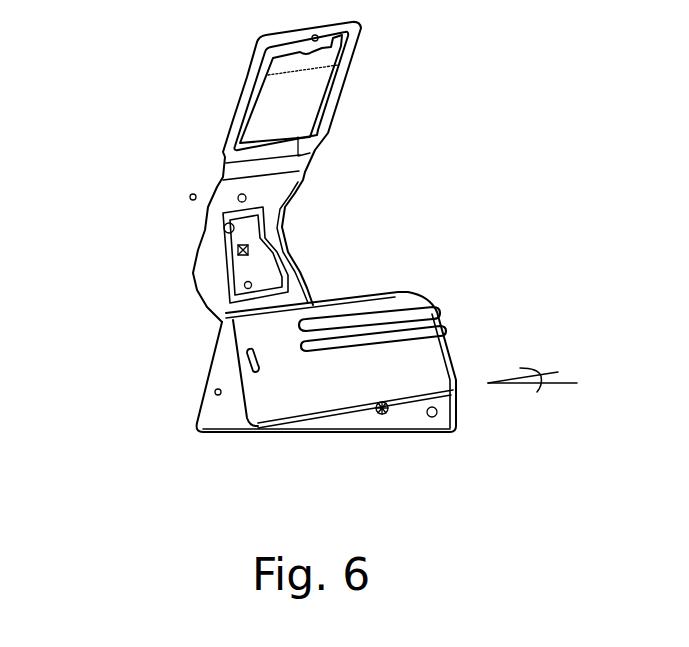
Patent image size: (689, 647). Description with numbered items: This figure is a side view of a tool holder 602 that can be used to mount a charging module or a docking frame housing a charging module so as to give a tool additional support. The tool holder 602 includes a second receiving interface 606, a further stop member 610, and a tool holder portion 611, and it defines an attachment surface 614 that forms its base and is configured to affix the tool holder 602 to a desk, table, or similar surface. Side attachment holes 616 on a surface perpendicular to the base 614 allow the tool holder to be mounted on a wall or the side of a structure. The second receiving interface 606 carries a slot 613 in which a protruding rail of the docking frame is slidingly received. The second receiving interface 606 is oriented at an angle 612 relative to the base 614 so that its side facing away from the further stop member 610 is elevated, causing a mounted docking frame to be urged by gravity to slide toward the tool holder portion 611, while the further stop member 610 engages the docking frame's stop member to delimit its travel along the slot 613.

The tool holder 602 is at (120, 338).
The second receiving interface 606 is at (470, 298).
The further stop member 610 is at (248, 362).
The tool holder portion 611 is at (378, 151).
The angle 612 is at (543, 384).
The slot 613 is at (405, 318).
The attachment surface 614 is at (310, 433).
The side attachment holes 616 is at (216, 394).